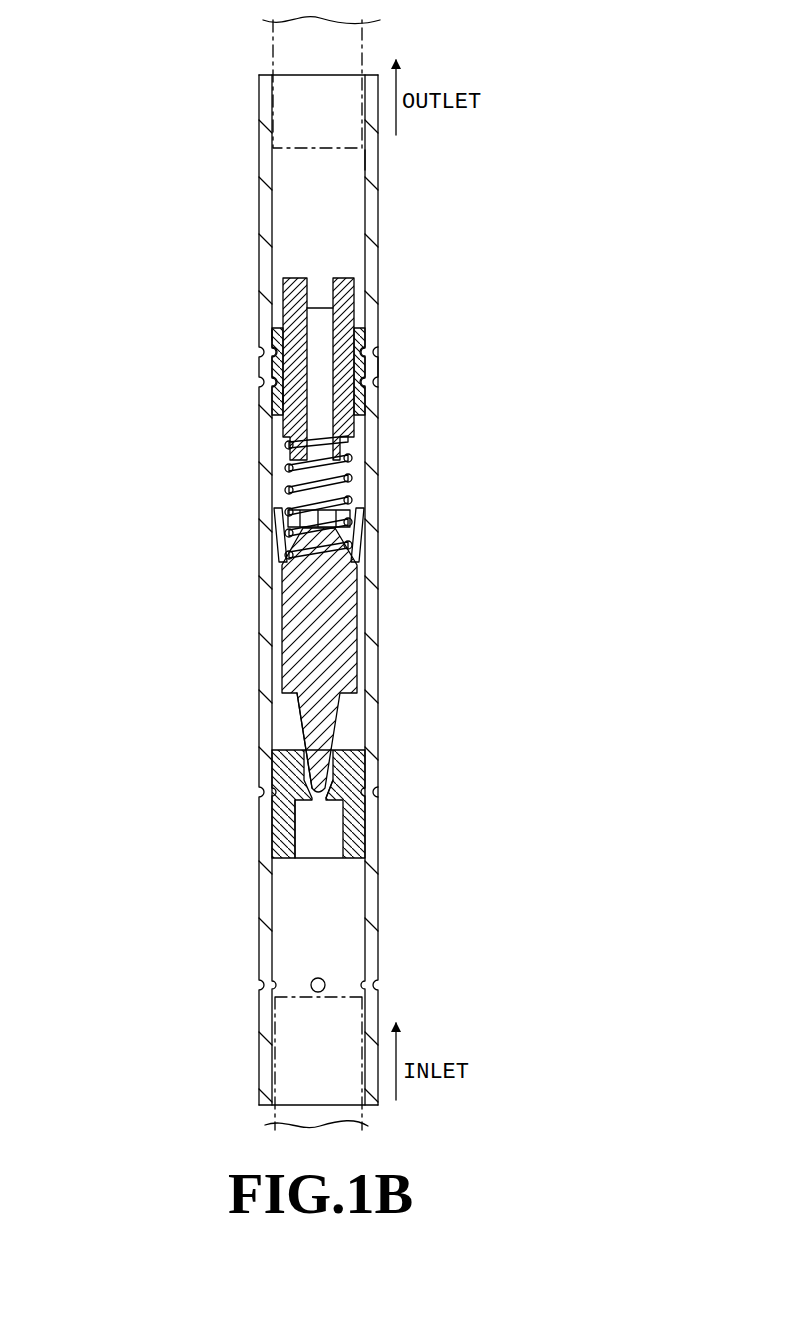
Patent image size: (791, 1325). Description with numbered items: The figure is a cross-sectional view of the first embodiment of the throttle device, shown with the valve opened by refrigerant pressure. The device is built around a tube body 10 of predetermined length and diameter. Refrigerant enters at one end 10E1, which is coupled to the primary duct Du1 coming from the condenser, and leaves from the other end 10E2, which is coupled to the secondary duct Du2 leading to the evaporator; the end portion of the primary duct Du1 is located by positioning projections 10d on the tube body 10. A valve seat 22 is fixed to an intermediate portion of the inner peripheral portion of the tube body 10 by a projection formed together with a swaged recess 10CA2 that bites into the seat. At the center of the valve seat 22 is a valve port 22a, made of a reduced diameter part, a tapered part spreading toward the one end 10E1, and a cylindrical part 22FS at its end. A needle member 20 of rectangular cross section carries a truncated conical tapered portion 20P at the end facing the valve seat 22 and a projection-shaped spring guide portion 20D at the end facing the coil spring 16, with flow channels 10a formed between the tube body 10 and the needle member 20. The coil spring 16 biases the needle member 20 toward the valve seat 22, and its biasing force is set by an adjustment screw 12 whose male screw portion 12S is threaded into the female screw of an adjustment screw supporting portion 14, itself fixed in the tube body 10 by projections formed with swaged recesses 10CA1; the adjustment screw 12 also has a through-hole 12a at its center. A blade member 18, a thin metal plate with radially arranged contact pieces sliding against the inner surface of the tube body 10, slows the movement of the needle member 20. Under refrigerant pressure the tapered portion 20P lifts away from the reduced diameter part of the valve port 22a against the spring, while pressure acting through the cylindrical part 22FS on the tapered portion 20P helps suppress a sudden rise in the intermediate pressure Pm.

The tube body 10 is at (378, 230).
The other end of tube body 10E2 is at (362, 148).
The flow channels 10a is at (384, 160).
The secondary duct Du2 is at (382, 28).
The adjustment screw 12 is at (292, 305).
The male screw portion 12S is at (277, 343).
The through-hole 12a is at (284, 397).
The adjustment screw supporting portion 14 is at (363, 350).
The recesses 10CA1 is at (379, 383).
The coil spring 16 is at (352, 483).
The blade member 18 is at (362, 535).
The spring guide portion 20D is at (288, 533).
The needle member 20 is at (347, 600).
The tapered portion 20P is at (332, 742).
The intermediate pressure Pm is at (296, 722).
The valve seat 22 is at (364, 757).
The valve port 22a is at (336, 781).
The cylindrical part 22FS is at (280, 843).
The recess 10CA2 is at (381, 793).
The positioning projections 10d is at (315, 978).
The one end of tube body 10E1 is at (374, 1006).
The primary duct Du1 is at (262, 1115).